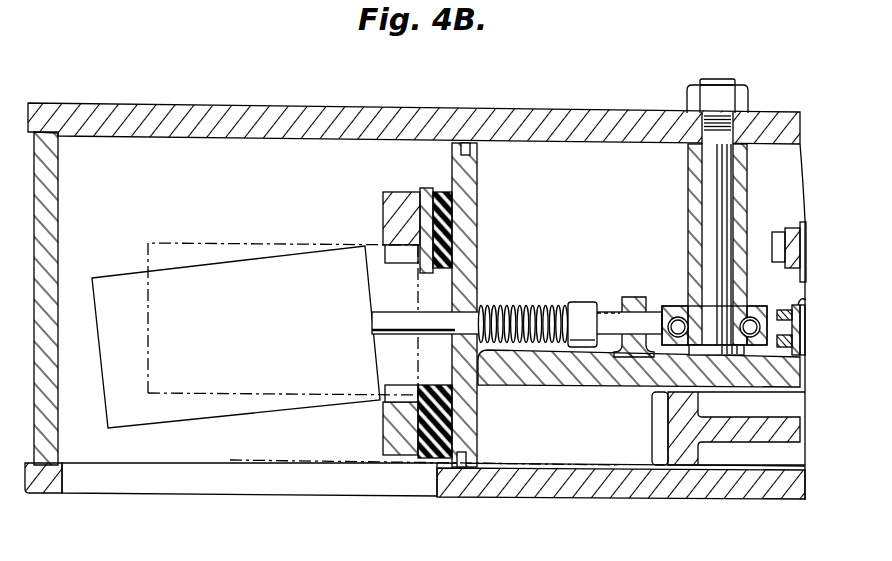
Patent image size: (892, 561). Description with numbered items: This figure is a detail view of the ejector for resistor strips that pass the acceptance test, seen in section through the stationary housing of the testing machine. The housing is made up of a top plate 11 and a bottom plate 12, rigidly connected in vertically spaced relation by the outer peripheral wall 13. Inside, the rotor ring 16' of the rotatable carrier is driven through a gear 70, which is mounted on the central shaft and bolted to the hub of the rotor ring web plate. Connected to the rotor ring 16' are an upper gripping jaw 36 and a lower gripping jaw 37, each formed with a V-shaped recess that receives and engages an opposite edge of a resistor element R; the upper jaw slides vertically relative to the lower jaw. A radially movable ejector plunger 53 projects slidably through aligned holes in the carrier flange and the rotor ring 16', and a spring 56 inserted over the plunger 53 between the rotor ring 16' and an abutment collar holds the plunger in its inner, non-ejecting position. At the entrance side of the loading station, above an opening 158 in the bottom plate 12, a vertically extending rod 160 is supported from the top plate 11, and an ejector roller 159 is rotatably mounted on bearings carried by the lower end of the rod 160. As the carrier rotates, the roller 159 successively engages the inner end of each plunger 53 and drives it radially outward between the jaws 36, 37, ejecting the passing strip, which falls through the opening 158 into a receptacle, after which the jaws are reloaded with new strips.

The top plate 11 is at (330, 112).
The bottom plate 12 is at (516, 498).
The outer peripheral ring or wall 13 is at (47, 332).
The rotor ring 16' is at (485, 305).
The upper gripping jaw 36 is at (385, 212).
The lower gripping jaw 37 is at (385, 434).
The ejector plunger 53 is at (605, 312).
The spring 56 is at (510, 305).
The gear 70 is at (738, 433).
The opening 158 is at (168, 483).
The ejector roller 159 is at (660, 306).
The vertically extending rod 160 is at (708, 188).
The resistor element R is at (148, 250).